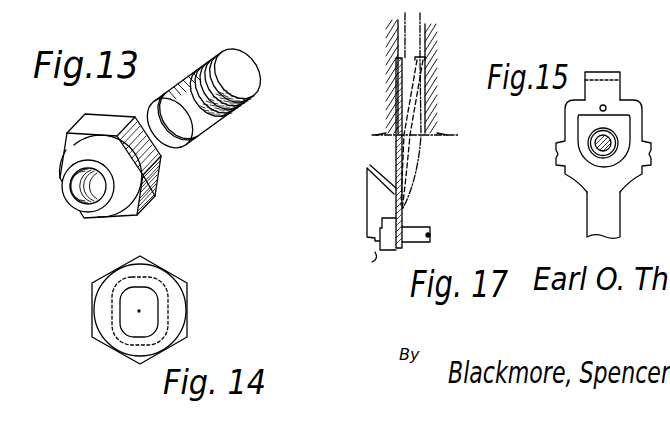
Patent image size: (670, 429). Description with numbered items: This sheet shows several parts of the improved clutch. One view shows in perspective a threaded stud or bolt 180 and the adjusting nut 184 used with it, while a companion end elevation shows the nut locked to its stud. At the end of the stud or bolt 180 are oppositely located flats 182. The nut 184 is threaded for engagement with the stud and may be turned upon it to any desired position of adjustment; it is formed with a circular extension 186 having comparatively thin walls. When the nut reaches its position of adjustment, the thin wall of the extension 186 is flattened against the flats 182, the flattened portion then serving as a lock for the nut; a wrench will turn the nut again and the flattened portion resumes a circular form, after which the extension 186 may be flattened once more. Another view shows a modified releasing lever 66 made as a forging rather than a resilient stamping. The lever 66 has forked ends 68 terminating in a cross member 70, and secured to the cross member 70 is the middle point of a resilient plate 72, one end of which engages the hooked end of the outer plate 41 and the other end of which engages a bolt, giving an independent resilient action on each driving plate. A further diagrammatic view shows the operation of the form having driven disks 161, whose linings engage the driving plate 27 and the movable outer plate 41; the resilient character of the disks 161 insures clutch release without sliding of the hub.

In FIG. 13, the threaded stud or bolt 180 is at (216, 103).
In FIG. 14, the threaded stud or bolt 180 is at (147, 300).
In FIG. 13, the flats 182 is at (212, 107).
In FIG. 14, the flats 182 is at (117, 313).
In FIG. 13, the nut 184 is at (120, 166).
In FIG. 14, the nut 184 is at (197, 285).
In FIG. 13, the circular extension 186 is at (83, 152).
In FIG. 14, the circular extension 186 is at (172, 315).
In FIG. 17, the driving plate 27 is at (427, 48).
In FIG. 17, the outer plate 41 is at (396, 72).
In FIG. 17, the driven disks 161 is at (397, 153).
In FIG. 15, the releasing lever 66 is at (595, 213).
In FIG. 15, the forked ends 68 is at (567, 128).
In FIG. 15, the cross member 70 is at (588, 134).
In FIG. 15, the resilient plate 72 is at (608, 72).